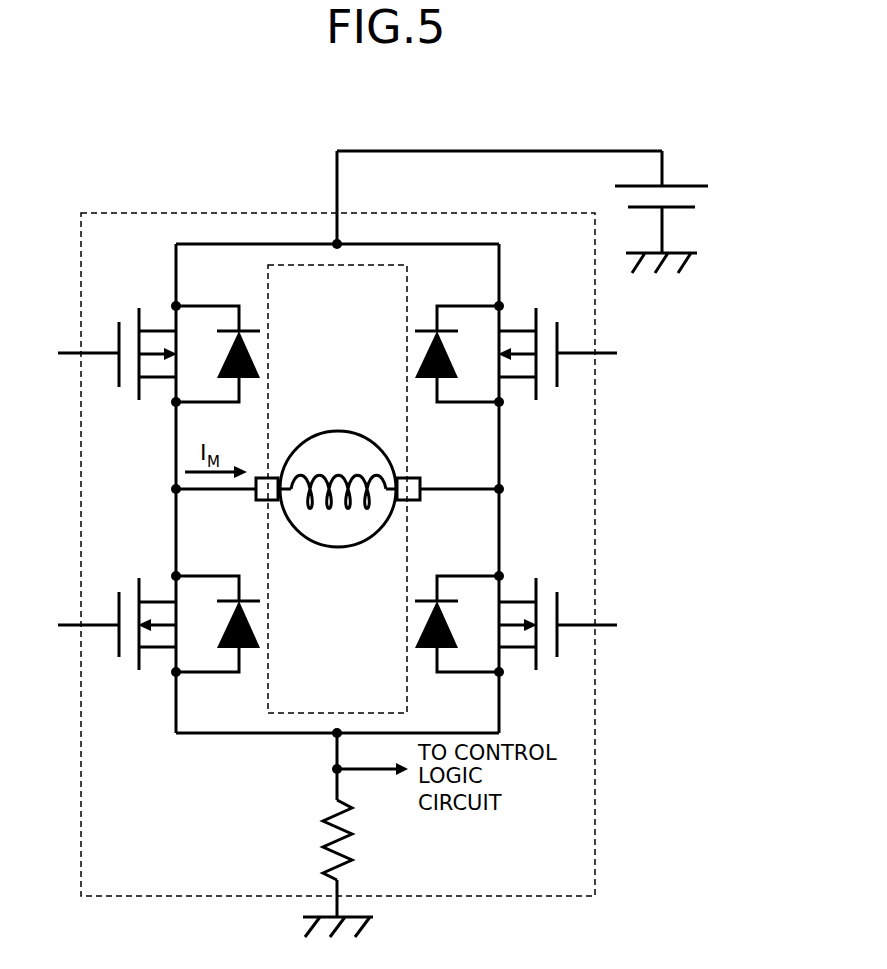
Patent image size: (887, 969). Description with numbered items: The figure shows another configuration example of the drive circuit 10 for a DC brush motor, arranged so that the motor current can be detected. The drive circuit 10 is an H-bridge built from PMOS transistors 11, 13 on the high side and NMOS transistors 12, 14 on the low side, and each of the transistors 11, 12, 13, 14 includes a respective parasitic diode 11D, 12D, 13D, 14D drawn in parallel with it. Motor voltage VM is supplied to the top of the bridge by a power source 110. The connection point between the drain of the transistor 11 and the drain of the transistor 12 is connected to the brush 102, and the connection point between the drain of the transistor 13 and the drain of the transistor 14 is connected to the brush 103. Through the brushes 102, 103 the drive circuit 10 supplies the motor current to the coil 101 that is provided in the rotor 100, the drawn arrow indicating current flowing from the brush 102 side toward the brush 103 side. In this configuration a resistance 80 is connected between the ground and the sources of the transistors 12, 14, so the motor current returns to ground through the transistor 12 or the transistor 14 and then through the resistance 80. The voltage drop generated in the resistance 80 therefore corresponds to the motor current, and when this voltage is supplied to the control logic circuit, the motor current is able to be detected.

The drive circuit 10 is at (178, 213).
The PMOS transistor 11 is at (119, 340).
The NMOS transistor 12 is at (119, 611).
The PMOS transistor 13 is at (557, 338).
The NMOS transistor 14 is at (557, 608).
The parasitic diode 11D is at (260, 350).
The parasitic diode 12D is at (252, 622).
The parasitic diode 13D is at (415, 355).
The parasitic diode 14D is at (425, 620).
The rotor 100 is at (332, 432).
The coil 101 is at (353, 468).
The brush 102 is at (260, 502).
The brush 103 is at (417, 502).
The resistance 80 is at (350, 838).
The power source 110 is at (681, 186).